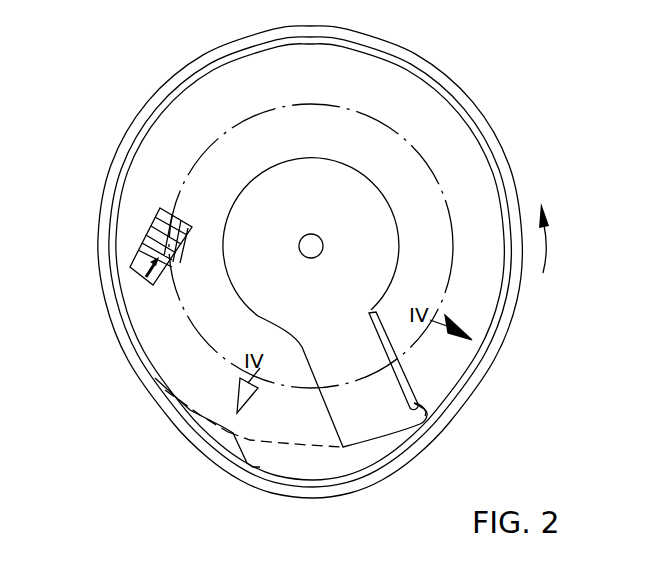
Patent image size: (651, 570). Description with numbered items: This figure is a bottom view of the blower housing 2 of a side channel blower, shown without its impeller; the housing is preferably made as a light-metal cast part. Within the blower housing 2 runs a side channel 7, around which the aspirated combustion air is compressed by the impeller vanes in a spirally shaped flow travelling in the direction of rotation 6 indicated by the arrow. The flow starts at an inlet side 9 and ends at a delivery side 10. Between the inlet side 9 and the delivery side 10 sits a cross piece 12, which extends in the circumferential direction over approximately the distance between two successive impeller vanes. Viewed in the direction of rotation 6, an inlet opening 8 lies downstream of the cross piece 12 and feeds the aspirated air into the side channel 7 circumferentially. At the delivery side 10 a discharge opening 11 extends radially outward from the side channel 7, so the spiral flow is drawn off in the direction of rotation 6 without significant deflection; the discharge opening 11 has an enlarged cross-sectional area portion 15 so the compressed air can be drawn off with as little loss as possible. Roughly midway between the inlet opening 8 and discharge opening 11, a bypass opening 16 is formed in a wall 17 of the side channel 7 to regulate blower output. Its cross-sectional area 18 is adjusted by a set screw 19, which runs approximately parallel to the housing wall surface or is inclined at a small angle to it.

The blower housing 2 is at (128, 117).
The direction of rotation 6 is at (548, 258).
The side channel 7 is at (430, 152).
The inlet opening 8 is at (415, 400).
The inlet side 9 is at (412, 362).
The delivery side 10 is at (286, 424).
The discharge opening 11 is at (327, 463).
The cross piece 12 is at (368, 412).
The enlarged cross-sectional area portion 15 is at (291, 488).
The bypass opening 16 is at (138, 252).
The wall 17 is at (321, 91).
The cross-sectional area 18 is at (136, 278).
The set screw 19 is at (153, 221).